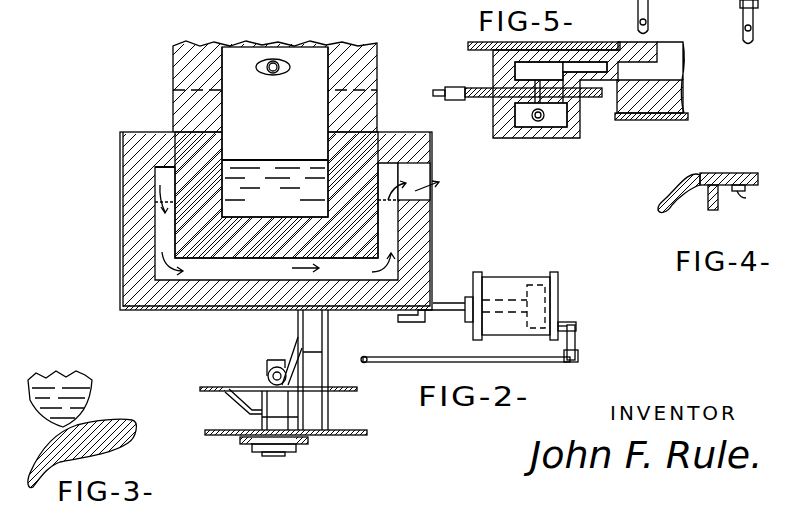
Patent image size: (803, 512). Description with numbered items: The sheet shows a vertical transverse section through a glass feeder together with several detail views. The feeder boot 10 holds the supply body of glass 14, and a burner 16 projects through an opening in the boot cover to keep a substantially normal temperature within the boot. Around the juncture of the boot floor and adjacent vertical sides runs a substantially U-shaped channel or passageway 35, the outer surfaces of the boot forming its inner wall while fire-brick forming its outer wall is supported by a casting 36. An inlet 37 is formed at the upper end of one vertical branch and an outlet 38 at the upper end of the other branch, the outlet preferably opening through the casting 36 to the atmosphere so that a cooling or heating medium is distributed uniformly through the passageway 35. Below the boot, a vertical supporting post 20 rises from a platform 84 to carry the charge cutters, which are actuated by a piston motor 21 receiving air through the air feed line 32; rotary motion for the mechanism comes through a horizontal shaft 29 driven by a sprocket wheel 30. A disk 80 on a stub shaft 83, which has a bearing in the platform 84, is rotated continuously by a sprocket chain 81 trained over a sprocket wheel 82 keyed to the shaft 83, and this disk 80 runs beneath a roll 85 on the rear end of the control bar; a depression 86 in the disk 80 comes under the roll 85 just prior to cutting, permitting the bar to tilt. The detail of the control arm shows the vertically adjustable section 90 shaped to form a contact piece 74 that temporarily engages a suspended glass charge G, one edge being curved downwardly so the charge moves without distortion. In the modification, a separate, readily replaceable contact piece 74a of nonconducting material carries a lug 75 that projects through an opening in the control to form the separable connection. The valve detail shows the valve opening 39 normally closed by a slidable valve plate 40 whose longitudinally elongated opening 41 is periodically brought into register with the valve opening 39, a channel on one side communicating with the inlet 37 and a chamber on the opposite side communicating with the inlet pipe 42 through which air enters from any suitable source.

In FIG. 2, the feeder boot 10 is at (294, 218).
In FIG. 2, the supply body of glass 14 is at (288, 163).
In FIG. 2, the burner 16 is at (276, 62).
In FIG. 2, the vertical supporting post 20 is at (318, 373).
In FIG. 2, the piston motor 21 is at (497, 332).
In FIG. 5, the horizontal shaft 29 is at (738, 22).
In FIG. 5, the sprocket wheel 30 is at (664, 17).
In FIG. 2, the air feed line 32 is at (437, 352).
In FIG. 2, the U-shaped channel or passageway 35 is at (276, 221).
In FIG. 5, the U-shaped channel or passageway 35 is at (675, 65).
In FIG. 2, the casting 36 is at (236, 310).
In FIG. 5, the casting 36 is at (642, 120).
In FIG. 2, the inlet 37 is at (165, 173).
In FIG. 5, the inlet 37 is at (632, 60).
In FIG. 2, the outlet 38 is at (420, 173).
In FIG. 5, the valve opening 39 is at (551, 102).
In FIG. 5, the slidable valve plate 40 is at (485, 97).
In FIG. 5, the longitudinally elongated opening 41 is at (553, 87).
In FIG. 5, the inlet pipe 42 is at (538, 122).
In FIG. 3, the contact piece 74 is at (95, 426).
In FIG. 4, the separate contact piece 74a is at (725, 173).
In FIG. 4, the lug 75 is at (742, 193).
In FIG. 2, the disk 80 is at (232, 387).
In FIG. 2, the sprocket chain 81 is at (243, 447).
In FIG. 2, the sprocket wheel 82 is at (260, 451).
In FIG. 2, the stub shaft 83 is at (280, 453).
In FIG. 2, the platform 84 is at (348, 429).
In FIG. 2, the roll 85 is at (268, 375).
In FIG. 2, the depression 86 is at (237, 407).
In FIG. 4, the vertically adjustable section 90 is at (708, 209).
In FIG. 3, the glob of metal G is at (85, 390).